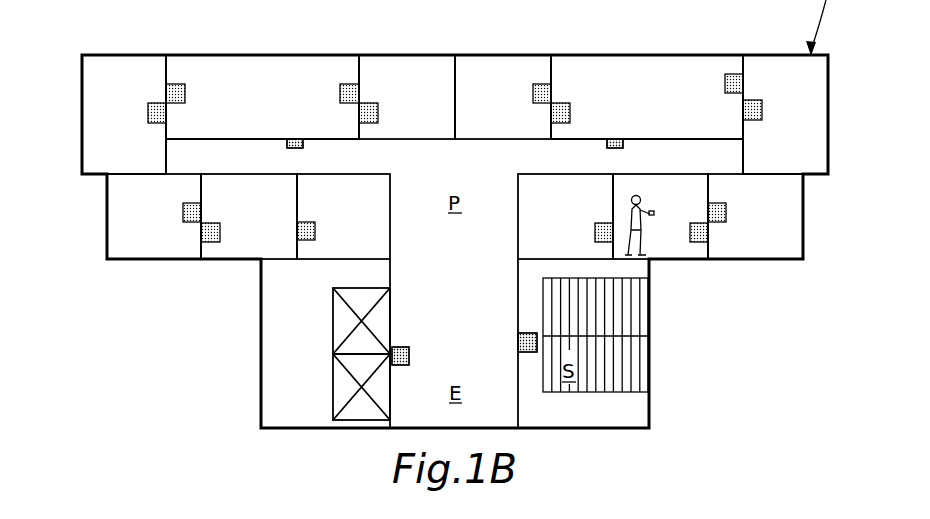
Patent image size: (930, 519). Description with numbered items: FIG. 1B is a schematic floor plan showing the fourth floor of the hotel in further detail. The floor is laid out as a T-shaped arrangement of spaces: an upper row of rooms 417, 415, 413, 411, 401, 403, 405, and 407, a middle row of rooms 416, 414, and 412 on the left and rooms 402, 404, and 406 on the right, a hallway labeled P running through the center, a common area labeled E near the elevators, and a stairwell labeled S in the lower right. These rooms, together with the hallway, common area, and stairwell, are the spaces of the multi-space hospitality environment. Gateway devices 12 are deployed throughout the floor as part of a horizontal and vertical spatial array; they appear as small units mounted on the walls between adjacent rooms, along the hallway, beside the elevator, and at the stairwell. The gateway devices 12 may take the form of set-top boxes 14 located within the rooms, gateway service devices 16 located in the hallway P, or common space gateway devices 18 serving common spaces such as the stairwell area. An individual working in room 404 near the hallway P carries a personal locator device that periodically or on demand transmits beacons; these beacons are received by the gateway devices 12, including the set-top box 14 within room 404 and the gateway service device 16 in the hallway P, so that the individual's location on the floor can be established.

The gateway device 12 is at (176, 84).
The set-top box 14 is at (702, 223).
The gateway service device 16 is at (294, 148).
The common space gateway device 18 is at (517, 352).
The room 401 is at (503, 97).
The room 402 is at (565, 216).
The room 403 is at (600, 97).
The room 404 is at (660, 216).
The room 405 is at (696, 97).
The room 406 is at (755, 216).
The room 407 is at (785, 114).
The room 411 is at (407, 97).
The room 412 is at (343, 216).
The room 413 is at (309, 97).
The room 414 is at (249, 216).
The room 415 is at (213, 97).
The room 416 is at (154, 216).
The room 417 is at (124, 114).